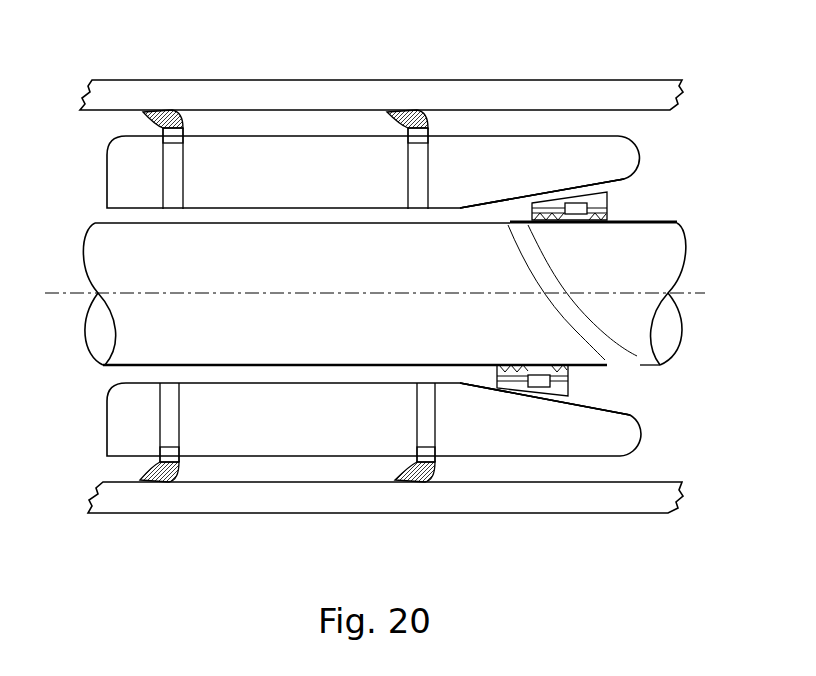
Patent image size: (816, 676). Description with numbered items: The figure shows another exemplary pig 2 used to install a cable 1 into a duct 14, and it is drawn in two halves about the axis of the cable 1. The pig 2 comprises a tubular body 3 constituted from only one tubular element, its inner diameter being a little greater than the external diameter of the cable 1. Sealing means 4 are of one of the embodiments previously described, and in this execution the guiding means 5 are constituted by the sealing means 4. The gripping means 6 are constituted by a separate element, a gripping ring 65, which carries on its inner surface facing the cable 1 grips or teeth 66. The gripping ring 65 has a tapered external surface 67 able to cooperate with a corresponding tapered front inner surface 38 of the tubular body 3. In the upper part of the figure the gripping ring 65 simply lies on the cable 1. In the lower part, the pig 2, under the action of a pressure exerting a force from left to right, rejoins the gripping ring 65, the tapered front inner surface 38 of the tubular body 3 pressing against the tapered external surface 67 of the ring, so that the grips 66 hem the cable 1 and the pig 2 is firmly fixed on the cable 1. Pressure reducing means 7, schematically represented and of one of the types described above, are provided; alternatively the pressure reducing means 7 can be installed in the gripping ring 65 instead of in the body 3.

The cable 1 is at (158, 278).
The pig 2 is at (298, 128).
The tubular body 3 is at (310, 175).
The sealing means 4 is at (287, 253).
The guiding means 5 is at (167, 108).
The gripping means 6 is at (610, 200).
The pressure reducing means 7 is at (187, 137).
The duct 14 is at (533, 92).
The tapered front inner surface 38 is at (507, 200).
The gripping ring 65 is at (568, 390).
The grips or teeth 66 is at (560, 225).
The tapered external surface 67 is at (572, 188).